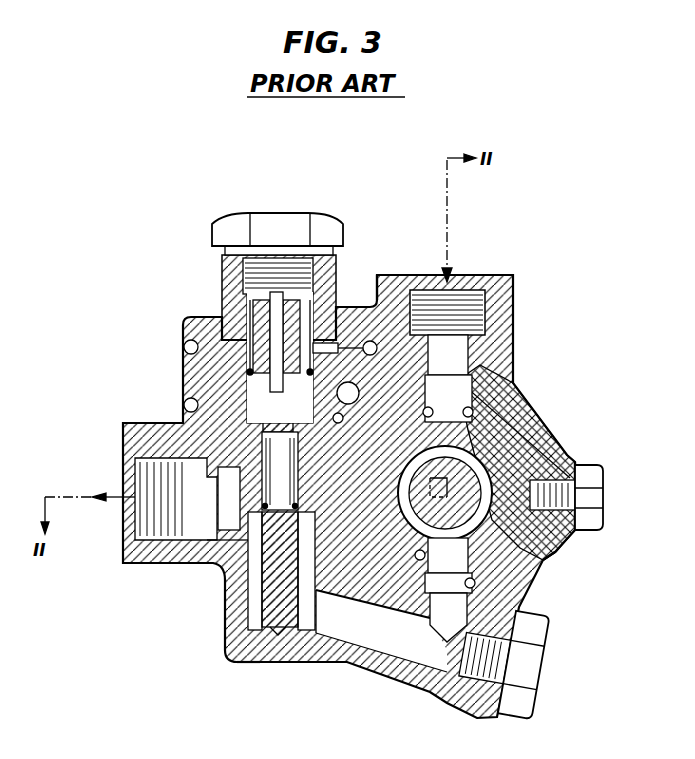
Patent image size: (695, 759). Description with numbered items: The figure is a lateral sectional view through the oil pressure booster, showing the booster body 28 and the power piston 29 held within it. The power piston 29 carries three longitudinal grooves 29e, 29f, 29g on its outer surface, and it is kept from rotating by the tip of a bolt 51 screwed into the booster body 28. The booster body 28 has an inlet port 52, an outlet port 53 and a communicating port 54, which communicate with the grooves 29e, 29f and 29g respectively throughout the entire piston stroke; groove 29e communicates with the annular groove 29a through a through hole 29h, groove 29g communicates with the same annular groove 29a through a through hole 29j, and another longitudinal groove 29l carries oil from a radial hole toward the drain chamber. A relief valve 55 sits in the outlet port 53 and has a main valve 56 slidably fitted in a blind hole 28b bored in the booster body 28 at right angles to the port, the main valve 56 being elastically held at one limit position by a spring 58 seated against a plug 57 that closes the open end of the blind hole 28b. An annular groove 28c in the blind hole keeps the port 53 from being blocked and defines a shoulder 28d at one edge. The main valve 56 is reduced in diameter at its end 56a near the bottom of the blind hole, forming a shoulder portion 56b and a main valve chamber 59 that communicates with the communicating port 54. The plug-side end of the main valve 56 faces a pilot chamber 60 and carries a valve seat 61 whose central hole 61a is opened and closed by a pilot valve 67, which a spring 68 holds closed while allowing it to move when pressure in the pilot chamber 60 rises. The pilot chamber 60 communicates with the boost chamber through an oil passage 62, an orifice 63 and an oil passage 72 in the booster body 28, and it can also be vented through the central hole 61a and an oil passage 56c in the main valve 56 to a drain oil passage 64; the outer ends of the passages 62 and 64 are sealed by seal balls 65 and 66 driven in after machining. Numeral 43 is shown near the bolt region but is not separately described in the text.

The booster body 28 is at (513, 303).
The blind hole 28b is at (215, 445).
The annular groove 28c is at (218, 562).
The shoulder 28d is at (322, 600).
The power piston 29 is at (535, 445).
The annular groove 29a is at (490, 460).
The longitudinal groove 29e is at (495, 395).
The longitudinal groove 29f is at (368, 605).
The longitudinal groove 29g is at (480, 628).
The through hole 29h is at (490, 418).
The through hole 29j is at (475, 585).
The longitudinal groove 29l is at (555, 555).
The plug boss 43 is at (575, 535).
The bolt 51 is at (590, 500).
The inlet port 52 is at (473, 300).
The outlet port 53 is at (222, 555).
The communicating port 54 is at (425, 648).
The relief valve 55 is at (228, 575).
The main valve 56 is at (275, 628).
The reduced-diameter end 56a is at (235, 663).
The shoulder portion 56b is at (238, 540).
The oil passage 56c is at (472, 370).
The plug 57 is at (232, 224).
The spring 58 is at (240, 298).
The main valve chamber 59 is at (303, 628).
The pilot chamber 60 is at (277, 303).
The valve seat 61 is at (245, 313).
The central hole 61a is at (250, 372).
The oil passage 62 is at (345, 300).
The orifice 63 is at (360, 340).
The drain oil passage 64 is at (400, 345).
The seal ball 65 is at (249, 350).
The seal ball 66 is at (183, 402).
The pilot valve 67 is at (262, 397).
The spring 68 is at (262, 570).
The oil passage 72 is at (378, 330).